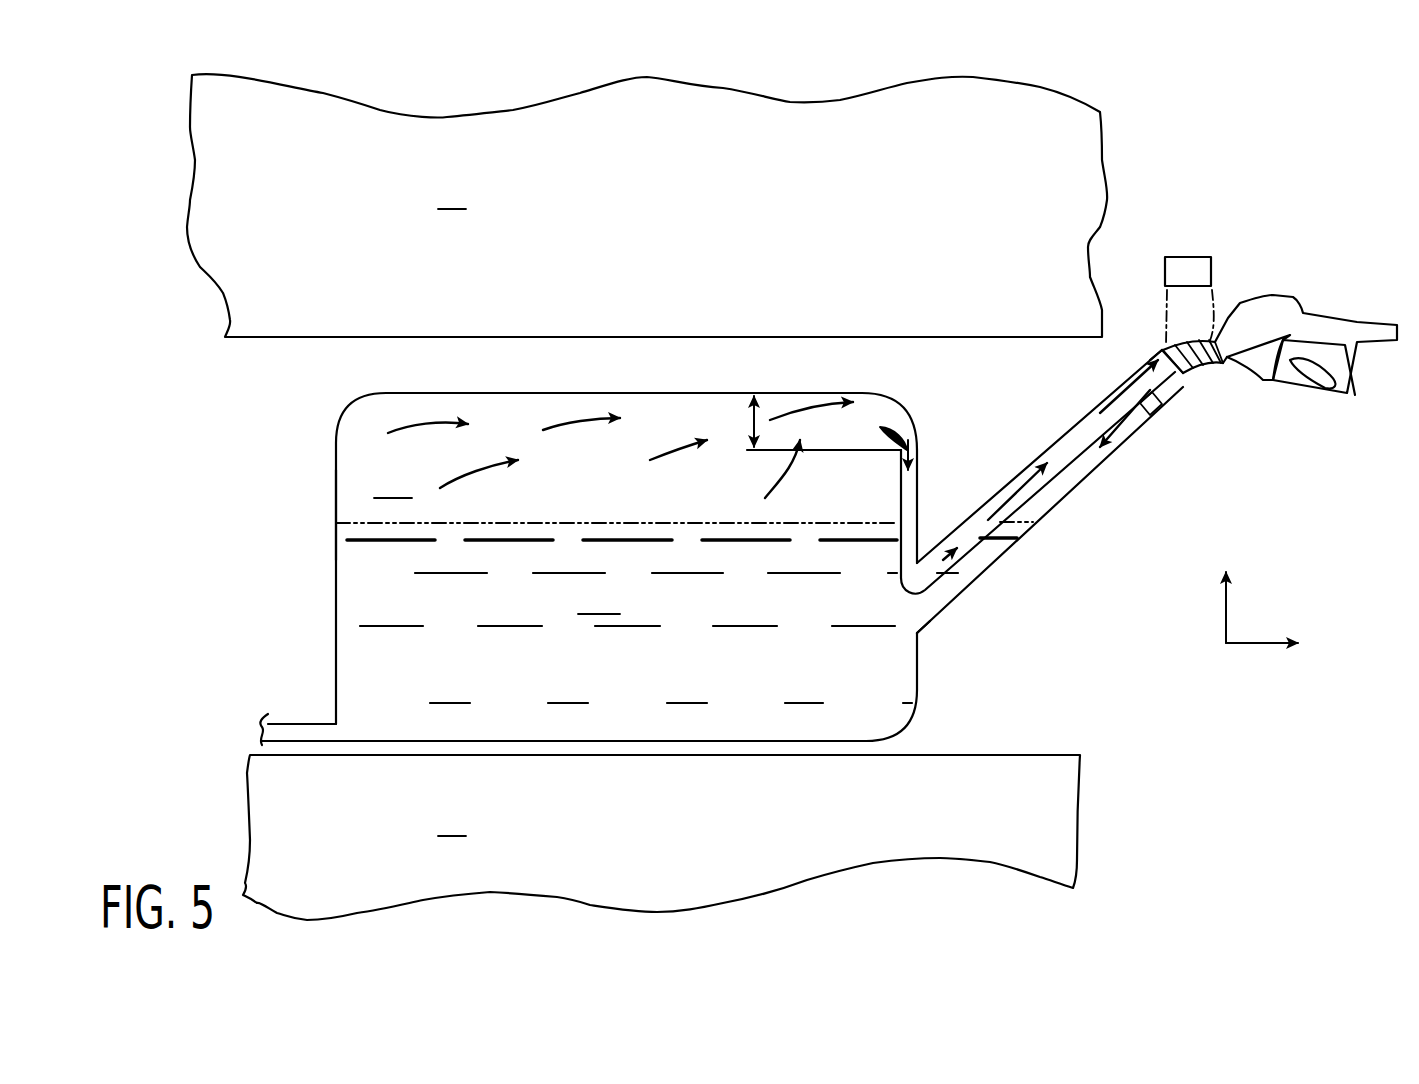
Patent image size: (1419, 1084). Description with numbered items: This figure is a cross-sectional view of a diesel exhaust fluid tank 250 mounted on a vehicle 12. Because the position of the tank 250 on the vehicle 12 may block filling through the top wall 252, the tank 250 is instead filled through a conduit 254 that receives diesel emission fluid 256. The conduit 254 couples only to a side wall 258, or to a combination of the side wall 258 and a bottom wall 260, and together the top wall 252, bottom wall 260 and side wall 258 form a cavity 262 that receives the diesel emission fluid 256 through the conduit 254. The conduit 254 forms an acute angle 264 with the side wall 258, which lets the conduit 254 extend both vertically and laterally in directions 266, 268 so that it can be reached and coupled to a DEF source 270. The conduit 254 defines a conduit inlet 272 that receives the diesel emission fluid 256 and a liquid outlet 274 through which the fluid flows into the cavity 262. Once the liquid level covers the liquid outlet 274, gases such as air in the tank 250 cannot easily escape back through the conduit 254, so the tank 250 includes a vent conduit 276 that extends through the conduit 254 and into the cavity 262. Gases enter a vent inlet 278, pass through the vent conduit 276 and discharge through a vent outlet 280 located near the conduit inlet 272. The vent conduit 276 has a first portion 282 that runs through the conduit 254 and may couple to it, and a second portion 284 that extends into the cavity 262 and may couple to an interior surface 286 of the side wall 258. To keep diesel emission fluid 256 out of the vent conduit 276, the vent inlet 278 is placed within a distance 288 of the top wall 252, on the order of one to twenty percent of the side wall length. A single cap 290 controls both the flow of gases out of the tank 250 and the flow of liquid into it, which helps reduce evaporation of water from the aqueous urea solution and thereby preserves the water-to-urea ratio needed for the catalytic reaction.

The vehicle 12 is at (647, 497).
The tank 250 is at (297, 547).
The top wall 252 is at (545, 393).
The conduit 254 is at (1057, 500).
The diesel emission fluid 256 is at (684, 612).
The side wall 258 is at (917, 672).
The bottom wall 260 is at (560, 742).
The cavity 262 is at (613, 451).
The acute angle 264 is at (940, 547).
The vertical direction 266 is at (1226, 613).
The lateral direction 268 is at (1255, 645).
The DEF source 270 is at (1300, 310).
The conduit inlet 272 is at (1203, 372).
The liquid outlet 274 is at (917, 632).
The vent conduit 276 is at (1012, 378).
The vent inlet 278 is at (893, 436).
The vent outlet 280 is at (1163, 350).
The first portion 282 is at (1040, 458).
The second portion 284 is at (901, 487).
The interior surface 286 is at (917, 425).
The distance 288 is at (750, 422).
The cap 290 is at (1190, 257).